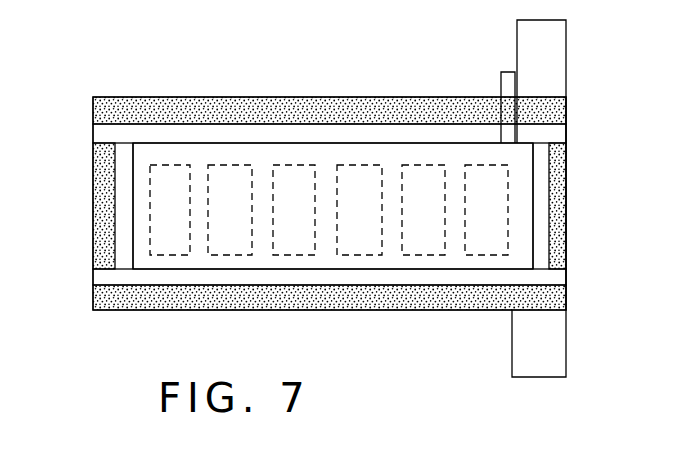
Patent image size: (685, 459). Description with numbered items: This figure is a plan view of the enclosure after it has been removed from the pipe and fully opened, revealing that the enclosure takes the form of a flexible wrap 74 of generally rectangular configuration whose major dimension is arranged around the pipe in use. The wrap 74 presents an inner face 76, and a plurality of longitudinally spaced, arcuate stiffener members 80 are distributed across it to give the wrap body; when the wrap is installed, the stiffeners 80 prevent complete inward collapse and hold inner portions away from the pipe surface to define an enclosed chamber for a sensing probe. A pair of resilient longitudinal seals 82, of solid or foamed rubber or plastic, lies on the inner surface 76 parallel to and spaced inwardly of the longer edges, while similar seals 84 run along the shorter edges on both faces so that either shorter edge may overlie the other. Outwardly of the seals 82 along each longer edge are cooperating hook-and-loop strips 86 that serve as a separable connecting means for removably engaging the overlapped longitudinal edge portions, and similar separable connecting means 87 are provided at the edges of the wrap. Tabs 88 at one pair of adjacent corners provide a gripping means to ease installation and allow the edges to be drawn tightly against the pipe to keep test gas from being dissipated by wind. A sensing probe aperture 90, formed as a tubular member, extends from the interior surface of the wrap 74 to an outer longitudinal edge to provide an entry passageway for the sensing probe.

The flexible wrap 74 is at (590, 202).
The inner face 76 is at (148, 155).
The stiffener members 80 is at (290, 165).
The longitudinal seals 82 is at (98, 132).
The seals 84 is at (123, 202).
The cooperating strips 86 is at (153, 108).
The separable connecting means 87 is at (98, 232).
The tabs 88 is at (562, 50).
The sensing probe aperture 90 is at (502, 83).